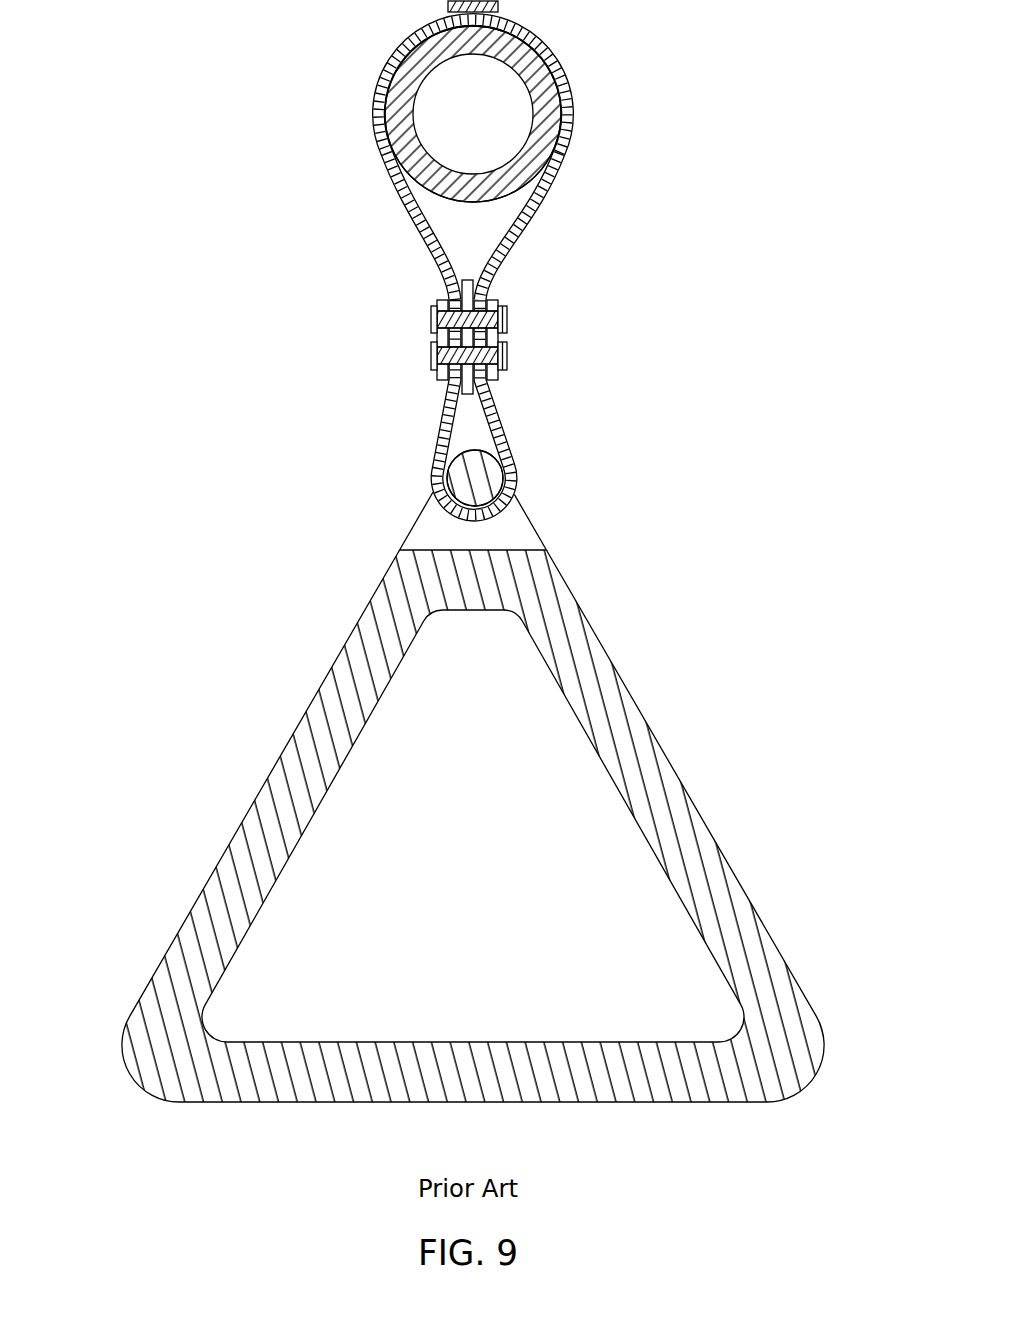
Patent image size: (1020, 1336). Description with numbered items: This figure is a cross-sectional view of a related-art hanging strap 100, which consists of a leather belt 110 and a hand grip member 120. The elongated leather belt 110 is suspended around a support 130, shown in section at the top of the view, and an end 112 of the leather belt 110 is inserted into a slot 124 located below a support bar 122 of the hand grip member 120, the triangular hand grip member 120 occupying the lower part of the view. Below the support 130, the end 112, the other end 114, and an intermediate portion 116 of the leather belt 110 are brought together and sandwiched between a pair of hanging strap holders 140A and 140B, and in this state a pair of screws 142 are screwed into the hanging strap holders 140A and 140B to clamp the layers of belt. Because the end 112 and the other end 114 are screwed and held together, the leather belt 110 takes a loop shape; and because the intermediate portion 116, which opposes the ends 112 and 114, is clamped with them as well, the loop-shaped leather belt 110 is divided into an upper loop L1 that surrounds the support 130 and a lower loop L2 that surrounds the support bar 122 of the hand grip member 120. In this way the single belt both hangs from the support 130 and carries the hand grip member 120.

The hanging strap 100 is at (148, 537).
The leather belt 110 is at (417, 208).
The end 112 is at (433, 237).
The other end 114 is at (452, 392).
The intermediate portion 116 is at (503, 346).
The hand grip member 120 is at (608, 700).
The support bar 122 is at (467, 480).
The slot 124 is at (508, 533).
The support 130 is at (552, 62).
The hanging strap holder 140A is at (437, 302).
The hanging strap holder 140B is at (500, 296).
The screws 142 is at (433, 313).
The loop L1 is at (509, 260).
The loop L2 is at (505, 437).